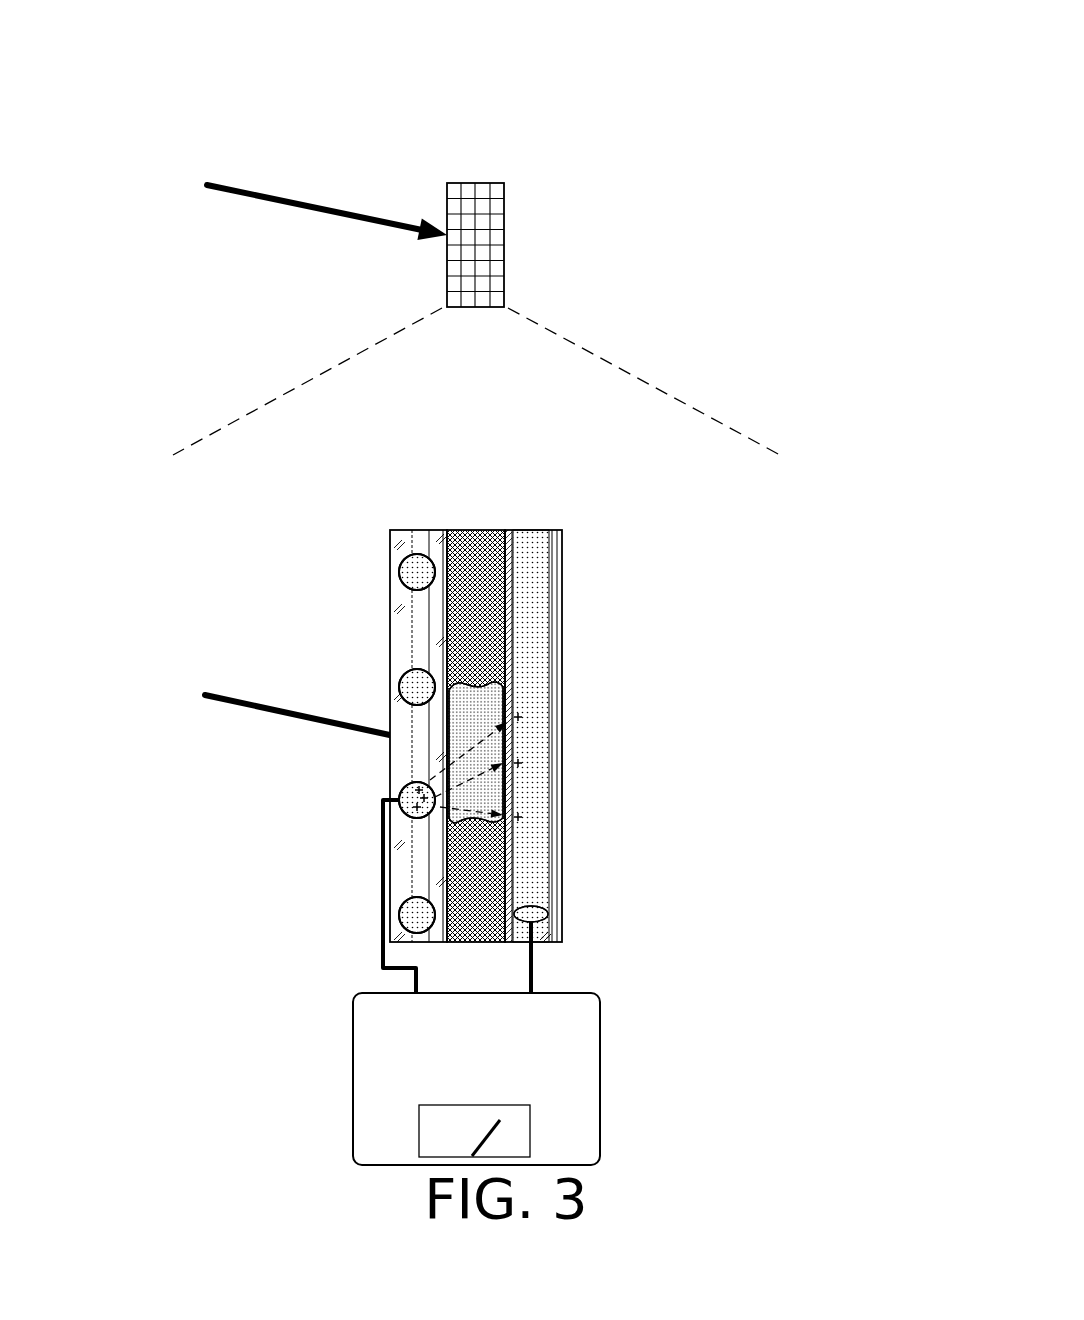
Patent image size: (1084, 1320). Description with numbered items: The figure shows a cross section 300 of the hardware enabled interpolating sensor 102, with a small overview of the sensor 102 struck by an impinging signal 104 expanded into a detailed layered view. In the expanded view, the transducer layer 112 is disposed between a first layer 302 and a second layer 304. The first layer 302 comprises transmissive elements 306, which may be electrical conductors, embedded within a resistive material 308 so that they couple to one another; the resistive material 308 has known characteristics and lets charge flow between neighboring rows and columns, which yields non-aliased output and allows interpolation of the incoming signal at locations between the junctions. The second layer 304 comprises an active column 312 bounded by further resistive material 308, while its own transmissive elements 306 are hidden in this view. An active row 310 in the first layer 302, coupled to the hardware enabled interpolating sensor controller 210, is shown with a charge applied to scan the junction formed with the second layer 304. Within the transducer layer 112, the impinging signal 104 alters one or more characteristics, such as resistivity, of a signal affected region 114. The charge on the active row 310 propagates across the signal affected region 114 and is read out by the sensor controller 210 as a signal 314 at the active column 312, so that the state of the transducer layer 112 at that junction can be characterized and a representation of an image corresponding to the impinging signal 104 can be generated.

The cross section 300 is at (769, 71).
The hardware enabled interpolating sensor 102 is at (474, 193).
The impinging signal 104 is at (281, 444).
The first layer 302 is at (444, 513).
The second layer 304 is at (562, 513).
The transmissive elements 306 is at (413, 572).
The resistive material 308 is at (322, 600).
The active row 310 is at (408, 797).
The active column 312 is at (528, 622).
The transducer layer 112 is at (478, 572).
The signal affected region 114 is at (487, 711).
The signal 314 is at (552, 766).
The hardware enabled interpolating sensor controller 210 is at (476, 1079).